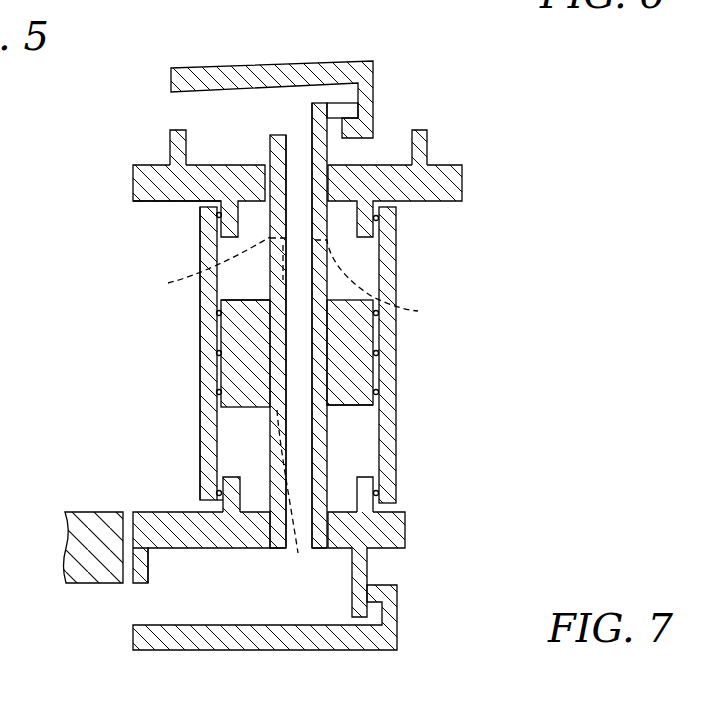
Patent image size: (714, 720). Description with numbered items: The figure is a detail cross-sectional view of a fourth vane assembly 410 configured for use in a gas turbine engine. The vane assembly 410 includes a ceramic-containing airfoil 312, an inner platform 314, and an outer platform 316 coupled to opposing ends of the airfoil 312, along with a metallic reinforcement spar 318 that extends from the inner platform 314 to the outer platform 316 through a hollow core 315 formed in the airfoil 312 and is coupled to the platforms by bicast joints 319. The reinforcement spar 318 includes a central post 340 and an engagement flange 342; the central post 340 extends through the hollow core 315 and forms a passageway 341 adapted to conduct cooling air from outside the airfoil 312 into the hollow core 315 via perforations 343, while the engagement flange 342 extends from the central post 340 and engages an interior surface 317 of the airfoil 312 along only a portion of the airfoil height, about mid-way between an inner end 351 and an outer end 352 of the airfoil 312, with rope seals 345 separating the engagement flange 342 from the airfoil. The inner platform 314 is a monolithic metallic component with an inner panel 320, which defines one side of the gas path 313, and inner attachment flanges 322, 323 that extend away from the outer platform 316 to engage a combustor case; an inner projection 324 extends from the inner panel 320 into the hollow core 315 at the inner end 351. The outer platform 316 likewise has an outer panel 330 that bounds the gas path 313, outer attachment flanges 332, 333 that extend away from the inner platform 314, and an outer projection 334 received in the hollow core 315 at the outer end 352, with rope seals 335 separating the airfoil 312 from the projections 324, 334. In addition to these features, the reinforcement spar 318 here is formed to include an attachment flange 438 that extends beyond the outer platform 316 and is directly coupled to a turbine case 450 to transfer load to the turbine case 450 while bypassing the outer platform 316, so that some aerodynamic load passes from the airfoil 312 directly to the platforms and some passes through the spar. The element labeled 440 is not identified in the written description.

The vane assembly 410 is at (388, 52).
The turbine case 450 is at (196, 65).
The attachment flange 438 is at (340, 103).
The central post 340 is at (277, 134).
The reinforcement spar 318 is at (327, 103).
The passageway 341 is at (287, 173).
The outer panel 330 is at (145, 163).
The outer attachment flange 332 is at (178, 128).
The outer platform 316 is at (155, 203).
The outer attachment flange 333 is at (427, 147).
The bicast joints 319 is at (265, 163).
The outer end of the airfoil 352 is at (207, 207).
The outer projection 334 is at (364, 243).
The rope seals 335 is at (376, 233).
The rope seals 345 is at (218, 320).
The airfoil 312 is at (197, 375).
The hollow core 315 is at (243, 287).
The gas path 313 is at (133, 352).
The interior surface 317 is at (377, 415).
The engagement flange 342 is at (347, 407).
The inner projection 324 is at (368, 477).
The perforations 343 is at (293, 411).
The inner platform 314 is at (145, 506).
The inner end of the airfoil 351 is at (215, 500).
The inner attachment flange 322 is at (150, 578).
The inner panel 320 is at (407, 528).
The inner attachment flange 323 is at (367, 582).
The base block 440 is at (85, 588).